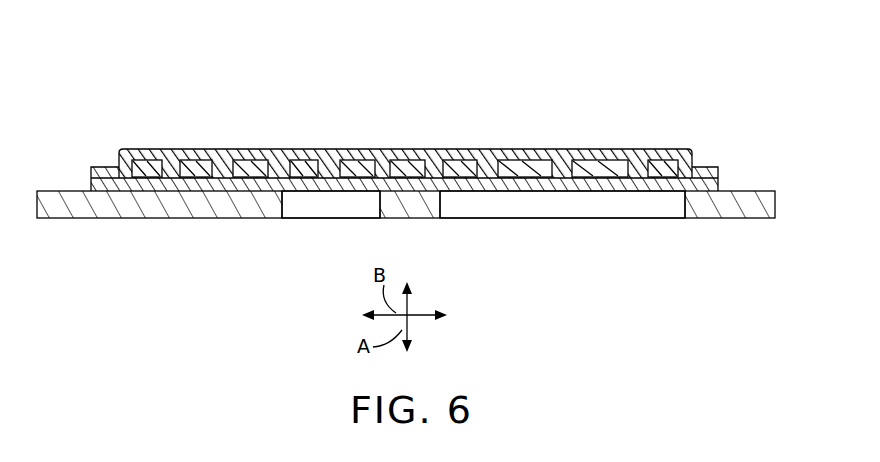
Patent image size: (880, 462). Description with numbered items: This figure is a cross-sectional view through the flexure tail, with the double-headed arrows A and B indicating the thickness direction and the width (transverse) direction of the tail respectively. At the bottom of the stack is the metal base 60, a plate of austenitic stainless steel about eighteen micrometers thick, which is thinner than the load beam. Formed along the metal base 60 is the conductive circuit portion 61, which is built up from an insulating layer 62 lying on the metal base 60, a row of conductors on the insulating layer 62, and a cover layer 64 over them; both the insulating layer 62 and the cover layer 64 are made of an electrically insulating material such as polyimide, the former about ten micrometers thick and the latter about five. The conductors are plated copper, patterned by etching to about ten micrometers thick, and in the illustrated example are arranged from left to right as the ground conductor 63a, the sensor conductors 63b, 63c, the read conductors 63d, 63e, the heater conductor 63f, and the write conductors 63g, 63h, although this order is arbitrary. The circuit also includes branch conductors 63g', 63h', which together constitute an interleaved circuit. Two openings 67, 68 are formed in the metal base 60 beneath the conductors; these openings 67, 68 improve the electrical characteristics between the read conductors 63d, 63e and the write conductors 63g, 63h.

The metal base 60 is at (165, 208).
The conductive circuit portion 61 is at (496, 76).
The insulating layer 62 is at (488, 183).
The ground conductor 63a is at (140, 151).
The sensor conductor 63b is at (190, 151).
The sensor conductor 63c is at (258, 151).
The read conductor 63d is at (302, 151).
The read conductor 63e is at (357, 151).
The heater conductor 63f is at (415, 151).
The write conductor 63g is at (525, 137).
The branch conductor 63g' is at (683, 137).
The write conductor 63h is at (600, 137).
The branch conductor 63h' is at (470, 137).
The cover layer 64 is at (645, 151).
The opening 67 is at (302, 208).
The opening 68 is at (558, 200).